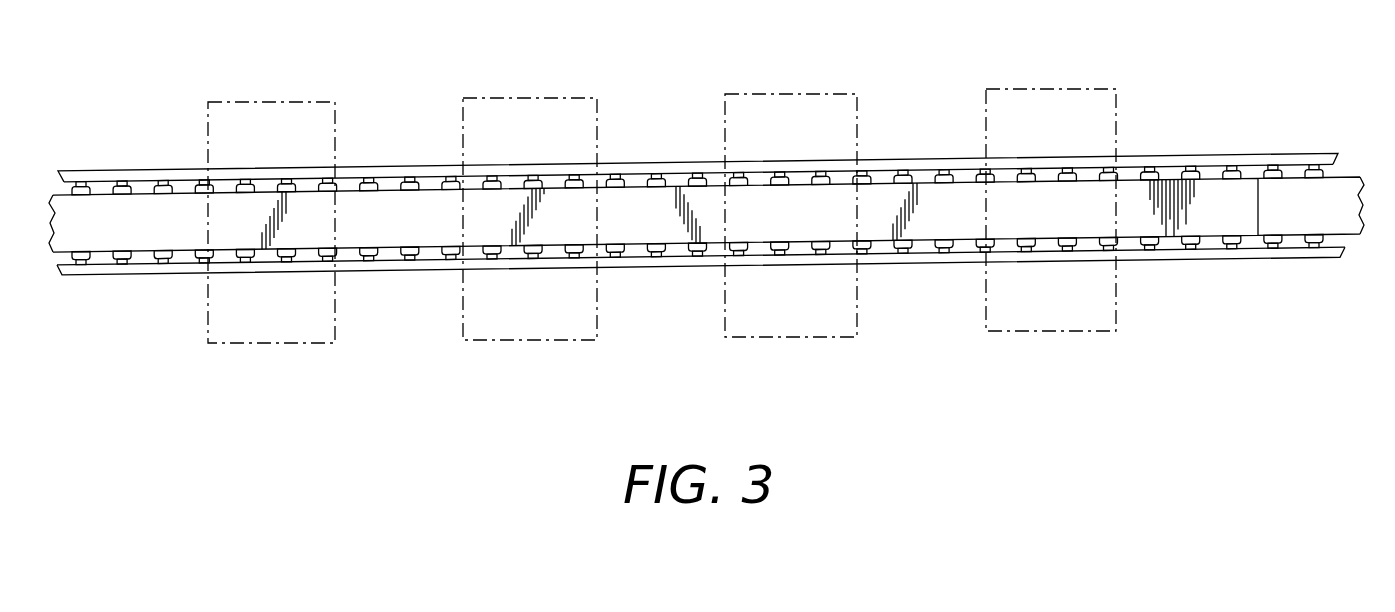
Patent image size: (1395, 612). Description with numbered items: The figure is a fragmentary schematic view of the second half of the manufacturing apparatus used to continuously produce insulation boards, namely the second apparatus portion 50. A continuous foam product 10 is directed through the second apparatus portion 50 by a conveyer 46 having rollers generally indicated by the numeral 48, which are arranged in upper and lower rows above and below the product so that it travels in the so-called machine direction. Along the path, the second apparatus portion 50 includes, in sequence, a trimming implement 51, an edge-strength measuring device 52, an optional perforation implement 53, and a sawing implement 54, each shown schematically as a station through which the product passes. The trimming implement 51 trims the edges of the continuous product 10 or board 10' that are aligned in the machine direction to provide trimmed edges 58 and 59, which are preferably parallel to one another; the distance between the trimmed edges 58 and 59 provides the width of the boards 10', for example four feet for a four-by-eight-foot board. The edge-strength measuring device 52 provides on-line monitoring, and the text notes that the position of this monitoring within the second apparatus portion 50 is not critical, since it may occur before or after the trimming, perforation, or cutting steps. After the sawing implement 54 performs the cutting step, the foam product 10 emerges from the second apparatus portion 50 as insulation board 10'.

The foam product 10 is at (653, 273).
The insulation board 10' is at (1279, 144).
The conveyer 46 is at (172, 283).
The rollers 48 is at (113, 182).
The second apparatus portion 50 is at (178, 136).
The trimming implement 51 is at (273, 115).
The edge-strength measuring device 52 is at (530, 108).
The perforation implement 53 is at (785, 102).
The sawing implement 54 is at (1038, 98).
The trimmed edge 58 is at (388, 190).
The trimmed edge 59 is at (390, 250).